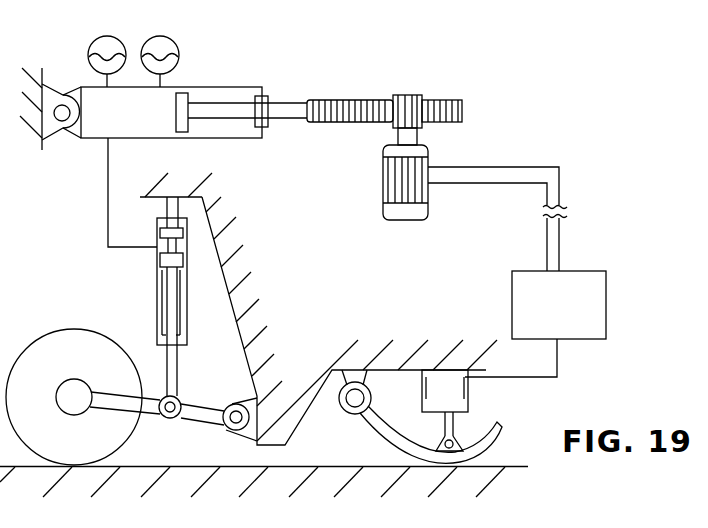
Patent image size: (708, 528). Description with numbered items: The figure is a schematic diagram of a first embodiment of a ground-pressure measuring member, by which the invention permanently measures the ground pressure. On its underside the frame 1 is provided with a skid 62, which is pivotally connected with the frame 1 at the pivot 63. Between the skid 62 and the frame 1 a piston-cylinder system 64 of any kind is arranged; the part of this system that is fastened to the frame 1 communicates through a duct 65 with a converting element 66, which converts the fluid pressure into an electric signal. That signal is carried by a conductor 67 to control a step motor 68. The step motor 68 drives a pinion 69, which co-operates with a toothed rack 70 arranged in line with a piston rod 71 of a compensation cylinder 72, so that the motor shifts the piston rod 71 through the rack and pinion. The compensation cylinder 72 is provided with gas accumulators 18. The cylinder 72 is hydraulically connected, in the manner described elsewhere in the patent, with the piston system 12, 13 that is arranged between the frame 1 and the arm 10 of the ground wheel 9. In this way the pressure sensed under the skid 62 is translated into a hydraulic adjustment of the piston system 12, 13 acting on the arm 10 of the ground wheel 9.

The frame 1 is at (222, 235).
The ground wheel 9 is at (33, 357).
The arm 10 is at (200, 412).
The piston system 12 is at (157, 300).
The piston system 13 is at (157, 248).
The gas accumulators 18 is at (153, 42).
The skid 62 is at (415, 450).
The pivot connection 63 is at (345, 408).
The piston-cylinder system 64 is at (456, 390).
The duct 65 is at (557, 377).
The converting element 66 is at (522, 292).
The conductor 67 is at (559, 241).
The step motor 68 is at (405, 212).
The pinion 69 is at (412, 100).
The toothed rack 70 is at (462, 112).
The piston rod 71 is at (290, 103).
The compensation cylinder 72 is at (249, 133).